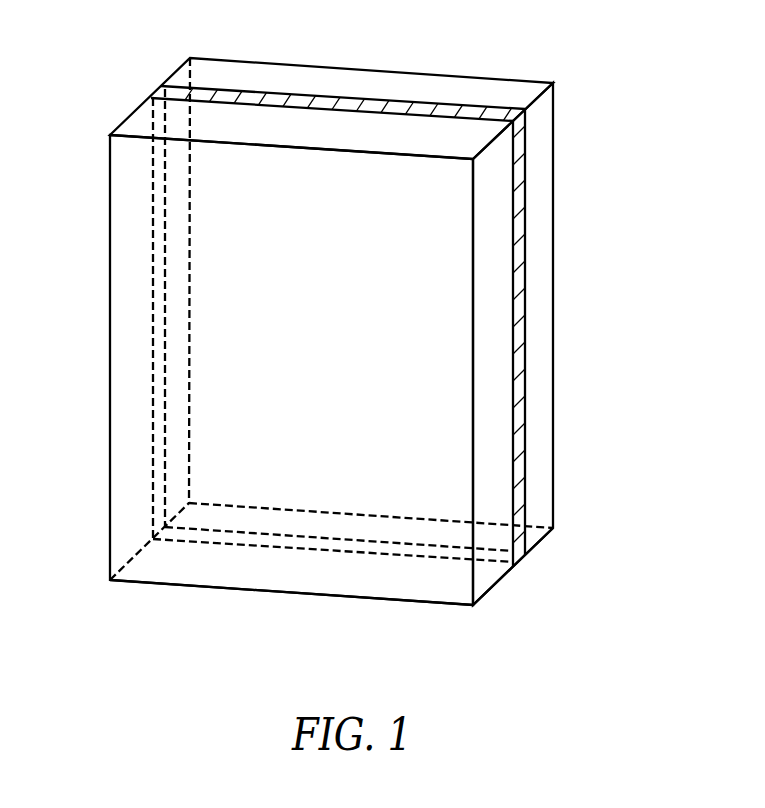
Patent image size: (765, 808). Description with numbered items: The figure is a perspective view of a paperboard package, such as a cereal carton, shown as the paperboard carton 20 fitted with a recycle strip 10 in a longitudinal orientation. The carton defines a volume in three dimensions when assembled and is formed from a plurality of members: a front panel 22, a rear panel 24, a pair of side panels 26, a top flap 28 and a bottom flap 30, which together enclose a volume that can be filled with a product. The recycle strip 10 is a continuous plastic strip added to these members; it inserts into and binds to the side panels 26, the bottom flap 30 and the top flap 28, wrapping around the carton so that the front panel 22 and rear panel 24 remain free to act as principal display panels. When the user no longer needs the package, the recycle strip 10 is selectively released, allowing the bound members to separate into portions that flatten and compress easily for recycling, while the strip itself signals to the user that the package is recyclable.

The recycle strip 10 is at (337, 296).
The paperboard carton 20 is at (350, 316).
The front panel 22 is at (329, 348).
The rear panel 24 is at (458, 76).
The side panels 26 is at (542, 171).
The top flap 28 is at (264, 92).
The bottom flap 30 is at (500, 579).